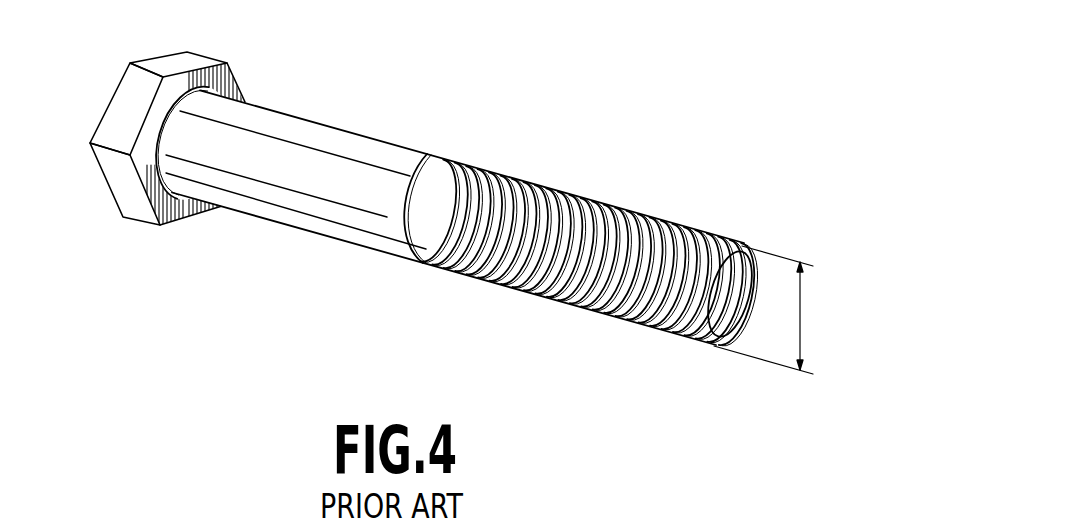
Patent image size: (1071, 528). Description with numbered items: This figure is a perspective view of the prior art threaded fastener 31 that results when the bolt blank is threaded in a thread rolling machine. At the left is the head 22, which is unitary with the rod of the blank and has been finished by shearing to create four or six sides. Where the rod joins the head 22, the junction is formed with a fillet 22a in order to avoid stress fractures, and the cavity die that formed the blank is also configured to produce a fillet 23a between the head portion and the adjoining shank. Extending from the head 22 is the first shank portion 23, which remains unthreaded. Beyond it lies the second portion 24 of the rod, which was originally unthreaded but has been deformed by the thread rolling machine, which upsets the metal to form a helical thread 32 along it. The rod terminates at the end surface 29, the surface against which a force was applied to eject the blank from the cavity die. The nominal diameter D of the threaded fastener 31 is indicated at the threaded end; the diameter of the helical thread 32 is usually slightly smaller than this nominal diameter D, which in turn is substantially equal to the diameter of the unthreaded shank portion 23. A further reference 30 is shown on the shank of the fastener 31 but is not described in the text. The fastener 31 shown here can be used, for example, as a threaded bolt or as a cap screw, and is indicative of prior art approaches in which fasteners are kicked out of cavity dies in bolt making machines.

The head 22 is at (228, 72).
The fillet 22a is at (160, 180).
The first shank portion 23 is at (455, 223).
The fillet 23a is at (447, 157).
The second portion 24 is at (589, 262).
The end surface 29 is at (733, 279).
The upper shank surface 30 is at (433, 150).
The threaded fastener 31 is at (380, 243).
The helical thread 32 is at (638, 210).
The nominal diameter D is at (800, 318).